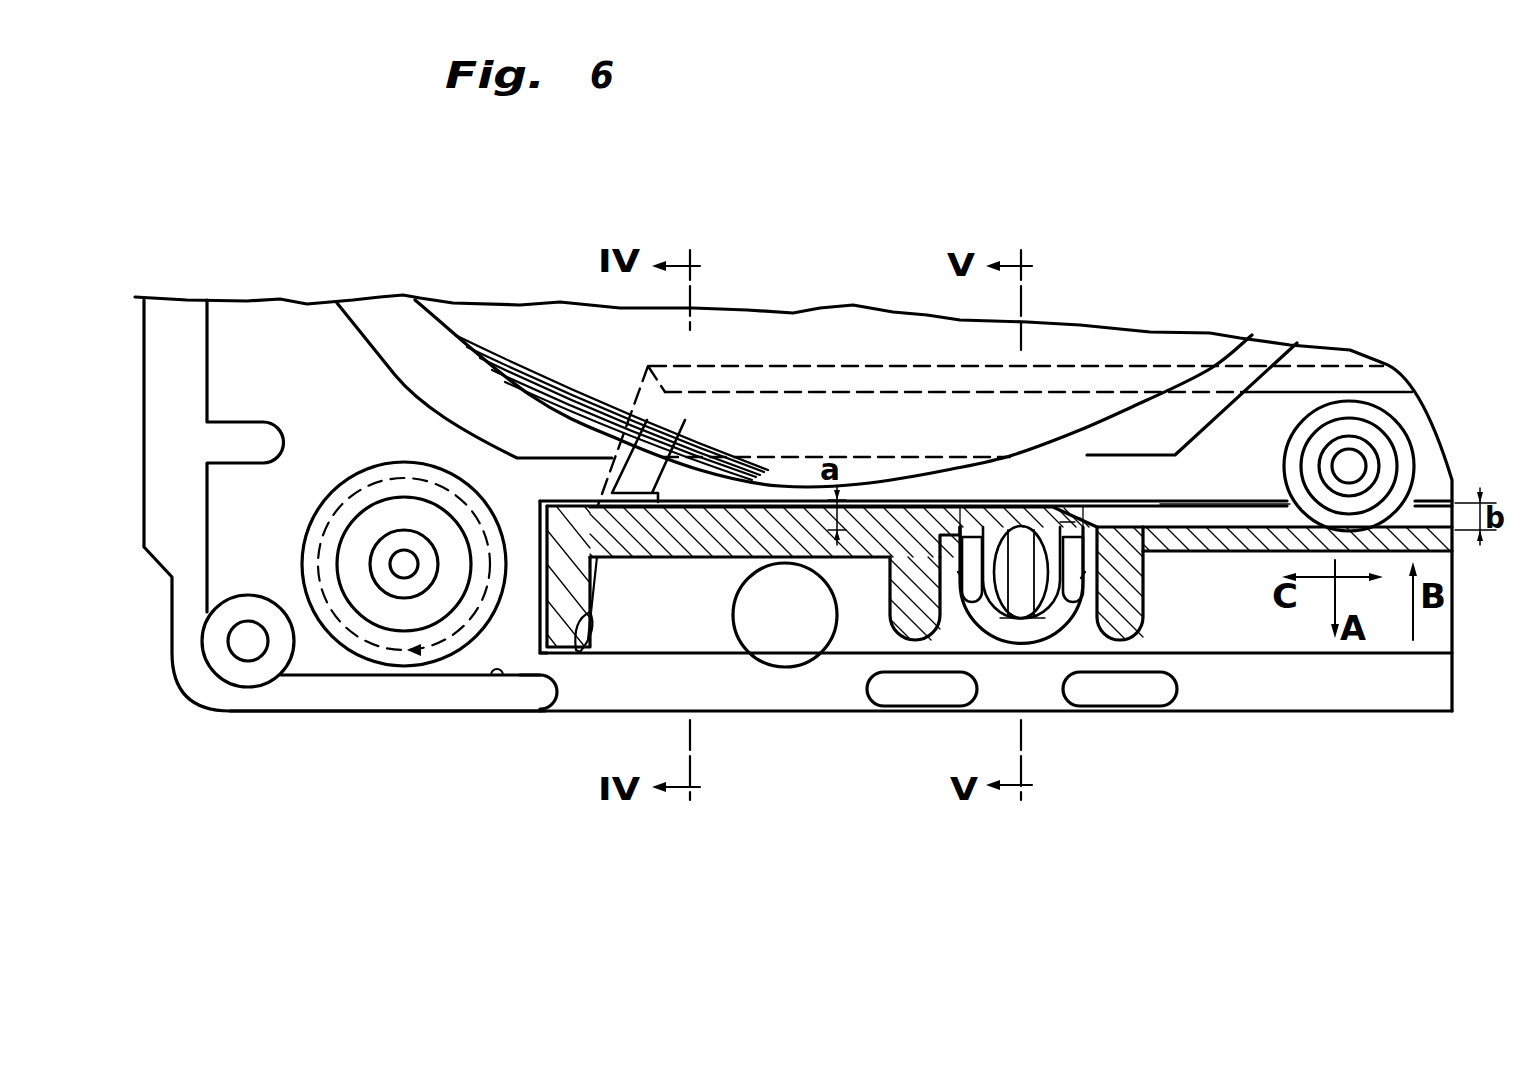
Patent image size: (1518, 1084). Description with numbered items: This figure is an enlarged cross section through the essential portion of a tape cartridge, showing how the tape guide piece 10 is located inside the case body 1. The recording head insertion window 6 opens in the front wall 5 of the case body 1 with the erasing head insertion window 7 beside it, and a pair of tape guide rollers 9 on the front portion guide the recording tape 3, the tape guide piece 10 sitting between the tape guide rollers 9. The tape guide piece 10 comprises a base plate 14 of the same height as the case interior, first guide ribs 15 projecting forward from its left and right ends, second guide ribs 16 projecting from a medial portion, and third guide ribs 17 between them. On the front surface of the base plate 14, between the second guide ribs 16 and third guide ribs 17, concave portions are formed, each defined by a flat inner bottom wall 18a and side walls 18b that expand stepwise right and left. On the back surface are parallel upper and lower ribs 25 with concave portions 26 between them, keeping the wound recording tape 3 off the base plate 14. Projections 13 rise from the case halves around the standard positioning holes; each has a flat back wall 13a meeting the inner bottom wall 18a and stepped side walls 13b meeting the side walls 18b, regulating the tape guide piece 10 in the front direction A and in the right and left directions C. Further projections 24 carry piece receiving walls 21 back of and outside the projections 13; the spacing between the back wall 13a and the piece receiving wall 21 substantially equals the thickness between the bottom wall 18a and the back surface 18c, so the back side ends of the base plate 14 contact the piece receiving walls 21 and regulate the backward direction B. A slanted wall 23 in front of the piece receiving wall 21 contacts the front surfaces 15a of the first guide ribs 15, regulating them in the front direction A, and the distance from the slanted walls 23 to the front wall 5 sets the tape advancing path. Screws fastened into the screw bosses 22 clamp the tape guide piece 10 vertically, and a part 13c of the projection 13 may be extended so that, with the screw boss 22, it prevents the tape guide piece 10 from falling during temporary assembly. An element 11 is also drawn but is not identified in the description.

The case body 1 is at (140, 453).
The recording tape 3 is at (577, 363).
The front wall 5 is at (522, 713).
The recording head insertion window 6 is at (1380, 693).
The erasing head insertion window 7 is at (735, 688).
The tape guide rollers 9 is at (387, 612).
The tape guide piece 10 is at (1225, 515).
The ball 11 is at (787, 657).
The projections 13 is at (1050, 522).
The flat back wall 13a is at (1000, 523).
The side walls 13b is at (978, 525).
The extended part of projection 13c is at (960, 575).
The base plate 14 is at (1423, 535).
The first guide ribs 15 is at (553, 598).
The front surfaces of first guide ribs 15a is at (563, 675).
The second guide ribs 16 is at (1127, 633).
The third guide ribs 17 is at (893, 635).
The flat inner bottom wall 18a is at (1027, 560).
The side walls of concave portion 18b is at (972, 608).
The back surface of base plate 18c is at (1070, 520).
The piece receiving walls 21 is at (687, 510).
The screw bosses 22 is at (235, 665).
The slanted wall 23 is at (597, 613).
The further projections 24 is at (653, 513).
The upper and lower ribs 25 is at (853, 505).
The concave portions between ribs 26 is at (806, 525).